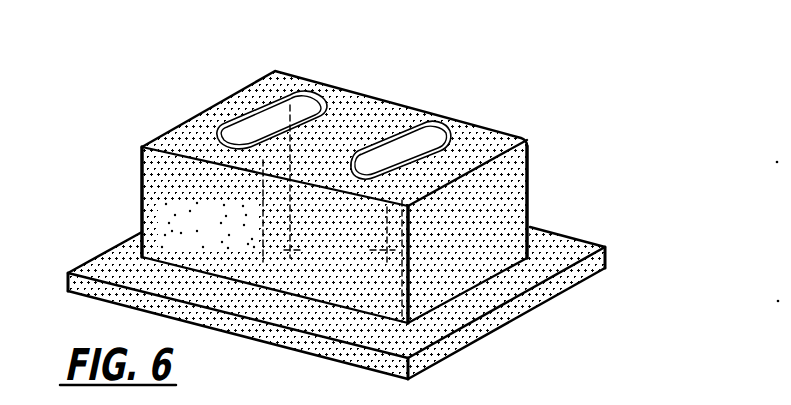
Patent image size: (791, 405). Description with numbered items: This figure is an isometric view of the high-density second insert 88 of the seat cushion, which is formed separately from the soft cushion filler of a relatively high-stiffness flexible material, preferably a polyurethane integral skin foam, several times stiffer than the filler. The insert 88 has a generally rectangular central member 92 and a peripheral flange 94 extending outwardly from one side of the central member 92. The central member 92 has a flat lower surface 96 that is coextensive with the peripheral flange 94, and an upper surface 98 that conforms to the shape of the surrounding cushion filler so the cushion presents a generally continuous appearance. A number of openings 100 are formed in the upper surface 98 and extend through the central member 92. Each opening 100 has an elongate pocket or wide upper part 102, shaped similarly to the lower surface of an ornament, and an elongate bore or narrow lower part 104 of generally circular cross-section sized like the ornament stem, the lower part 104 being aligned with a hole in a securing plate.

The second insert 88 is at (369, 205).
The central member 92 is at (372, 177).
The peripheral flange 94 is at (369, 292).
The flat lower surface 96 is at (517, 316).
The upper surface 98 is at (488, 137).
The openings 100 is at (250, 118).
The upper part 102 is at (297, 96).
The lower part 104 is at (332, 213).